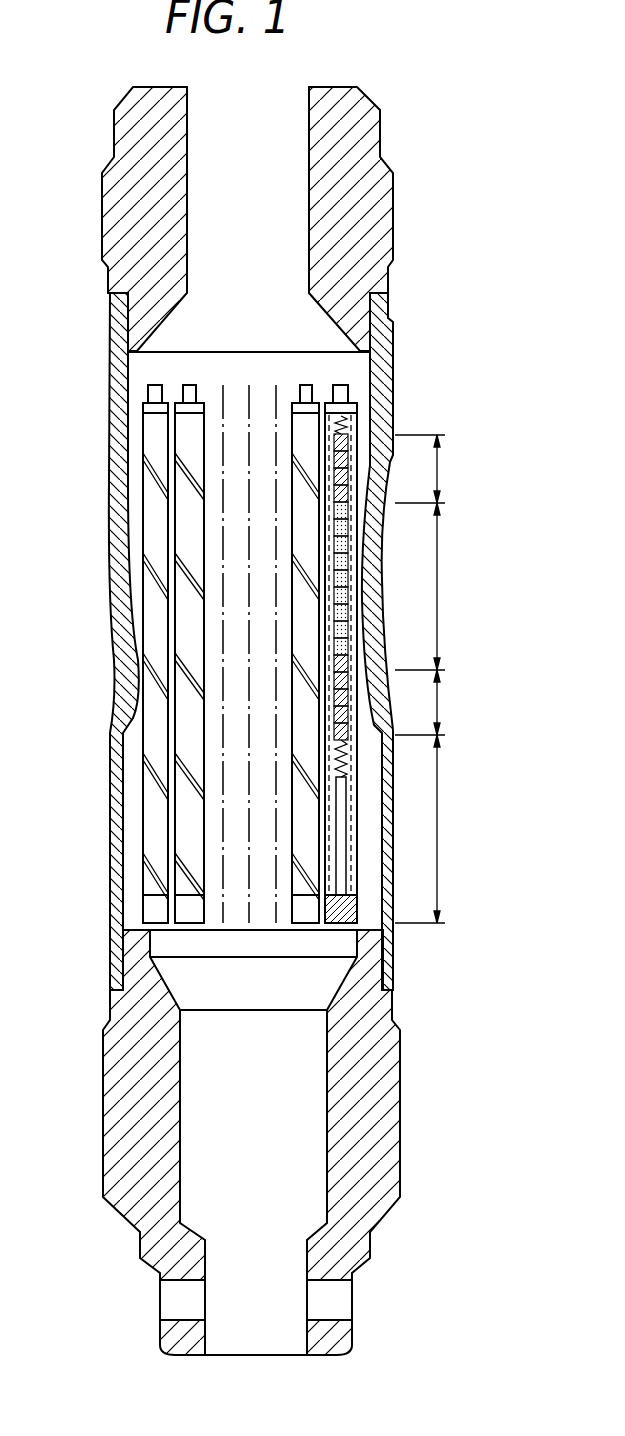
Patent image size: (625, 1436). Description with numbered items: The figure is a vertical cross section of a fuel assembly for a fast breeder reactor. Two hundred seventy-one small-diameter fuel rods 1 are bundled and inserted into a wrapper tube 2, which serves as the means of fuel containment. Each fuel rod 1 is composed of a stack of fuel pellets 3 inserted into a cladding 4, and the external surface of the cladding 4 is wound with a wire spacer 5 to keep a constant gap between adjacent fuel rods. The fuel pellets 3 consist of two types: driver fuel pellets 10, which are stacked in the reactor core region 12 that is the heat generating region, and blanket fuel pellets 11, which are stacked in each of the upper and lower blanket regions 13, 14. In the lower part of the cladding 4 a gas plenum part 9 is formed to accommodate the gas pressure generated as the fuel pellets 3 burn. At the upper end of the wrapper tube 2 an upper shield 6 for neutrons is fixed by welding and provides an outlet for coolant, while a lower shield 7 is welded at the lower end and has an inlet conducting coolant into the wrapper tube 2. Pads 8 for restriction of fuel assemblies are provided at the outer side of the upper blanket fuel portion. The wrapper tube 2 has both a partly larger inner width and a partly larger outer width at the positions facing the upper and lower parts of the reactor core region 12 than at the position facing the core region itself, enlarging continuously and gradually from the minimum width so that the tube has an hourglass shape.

The fuel rod 1 is at (153, 502).
The wrapper tube 2 is at (118, 605).
The fuel pellets 3 is at (342, 545).
The cladding 4 is at (362, 588).
The wire spacer 5 is at (310, 670).
The upper shield 6 is at (130, 246).
The lower shield 7 is at (130, 1135).
The pads 8 is at (393, 405).
The gas plenum part 9 is at (437, 840).
The driver fuel pellets 10 is at (342, 570).
The blanket fuel pellets 11 is at (349, 438).
The reactor core region 12 is at (437, 605).
The upper blanket region 13 is at (437, 462).
The lower blanket region 14 is at (437, 708).